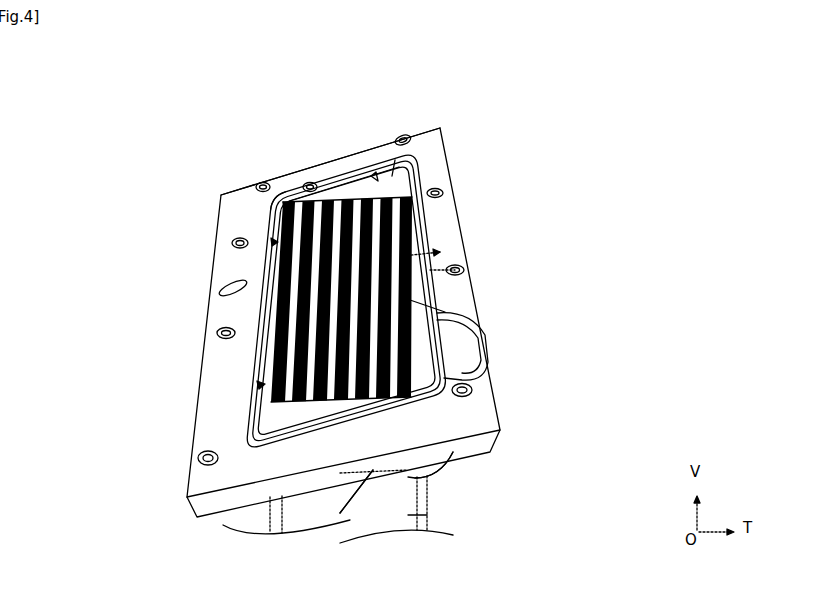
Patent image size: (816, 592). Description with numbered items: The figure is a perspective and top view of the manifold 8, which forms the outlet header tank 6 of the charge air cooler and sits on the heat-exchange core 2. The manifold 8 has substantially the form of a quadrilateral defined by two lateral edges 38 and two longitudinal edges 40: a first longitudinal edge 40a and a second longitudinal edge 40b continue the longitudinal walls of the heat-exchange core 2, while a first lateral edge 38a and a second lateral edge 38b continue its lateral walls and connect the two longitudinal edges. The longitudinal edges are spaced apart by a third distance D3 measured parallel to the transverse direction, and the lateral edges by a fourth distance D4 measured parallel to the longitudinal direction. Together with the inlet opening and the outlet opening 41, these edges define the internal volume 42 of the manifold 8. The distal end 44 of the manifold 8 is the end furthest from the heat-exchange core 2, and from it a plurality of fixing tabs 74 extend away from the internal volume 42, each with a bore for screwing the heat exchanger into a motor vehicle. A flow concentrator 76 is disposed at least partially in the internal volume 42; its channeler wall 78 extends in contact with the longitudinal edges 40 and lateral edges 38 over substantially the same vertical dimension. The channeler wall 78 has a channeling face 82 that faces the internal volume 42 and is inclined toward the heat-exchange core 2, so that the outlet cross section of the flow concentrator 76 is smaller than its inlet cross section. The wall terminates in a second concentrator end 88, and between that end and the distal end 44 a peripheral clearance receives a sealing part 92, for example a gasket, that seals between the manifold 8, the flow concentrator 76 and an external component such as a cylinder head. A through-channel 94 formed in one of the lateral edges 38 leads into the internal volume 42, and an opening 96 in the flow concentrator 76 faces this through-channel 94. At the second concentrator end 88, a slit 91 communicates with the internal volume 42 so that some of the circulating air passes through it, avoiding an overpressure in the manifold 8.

The heat-exchange core 2 is at (340, 513).
The outlet header tank 6 is at (507, 464).
The manifold 8 is at (440, 453).
The lateral edges 38 is at (304, 330).
The first lateral edge 38a is at (304, 330).
The second lateral edge 38b is at (331, 170).
The longitudinal edges 40 is at (316, 322).
The first longitudinal edge 40a is at (316, 322).
The second longitudinal edge 40b is at (250, 307).
The outlet opening 41 is at (222, 196).
The internal volume 42 is at (420, 165).
The distal end 44 is at (440, 250).
The fixing tab 74 is at (437, 192).
The flow concentrator 76 is at (373, 178).
The channeler wall 78 is at (340, 186).
The channeling face 82 is at (387, 180).
The second concentrator end 88 is at (418, 360).
The slit 91 is at (417, 315).
The sealing part 92 is at (470, 272).
The through-channel 94 is at (235, 162).
The opening 96 is at (267, 207).
The third distance D3 is at (278, 242).
The fourth distance D4 is at (265, 384).